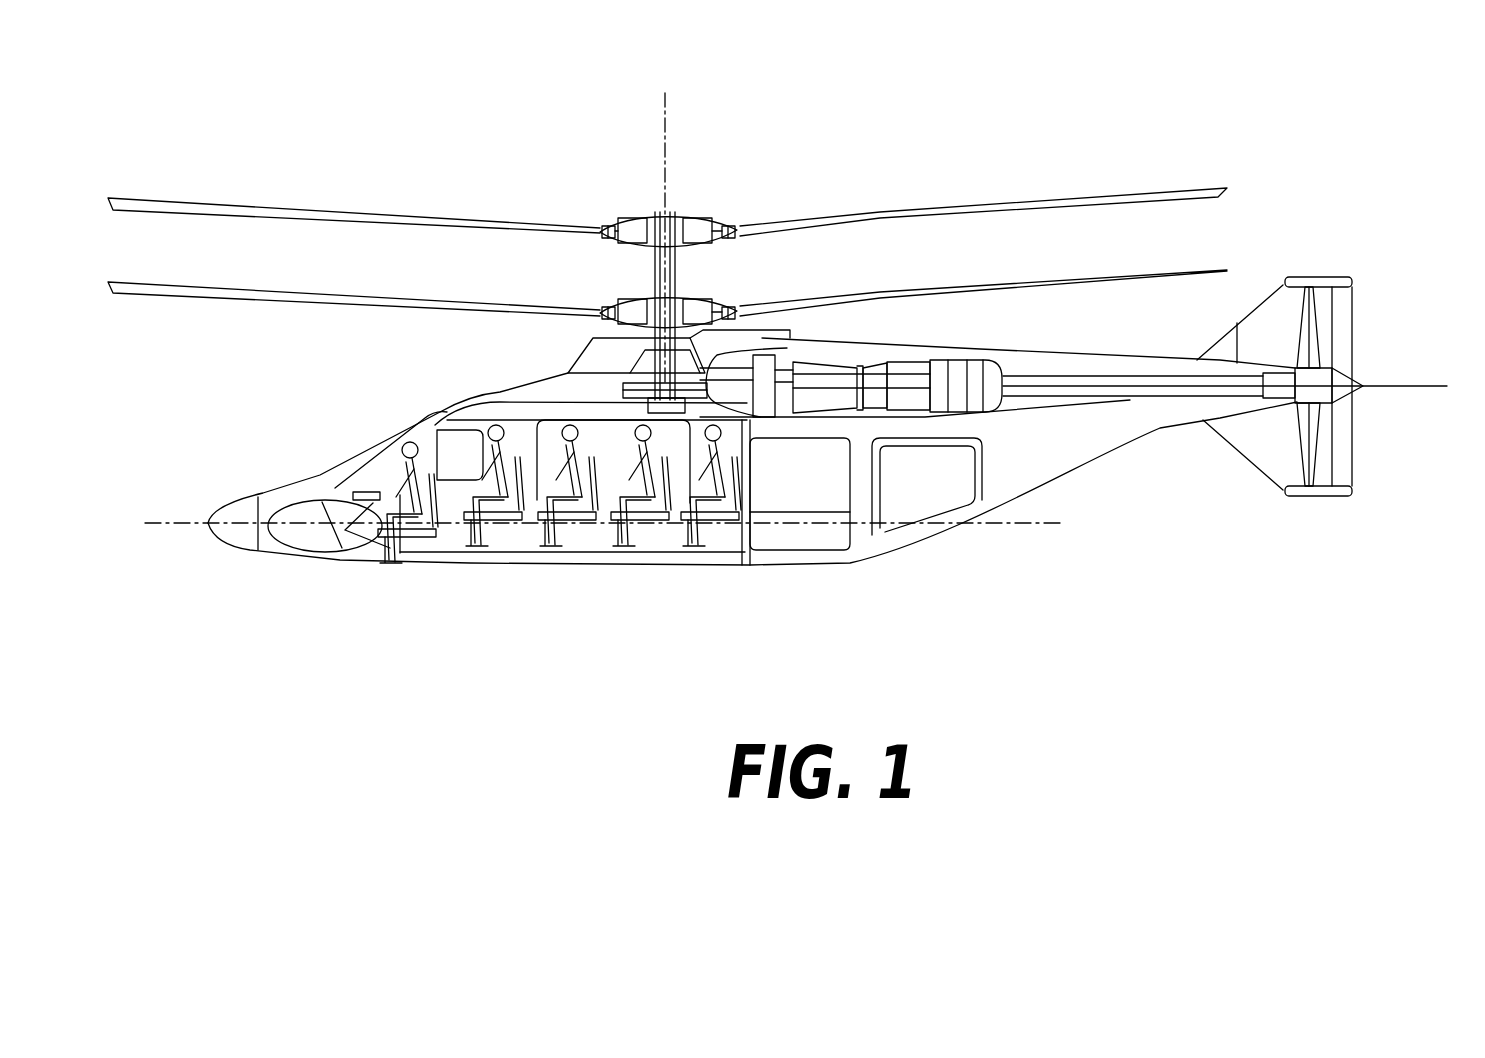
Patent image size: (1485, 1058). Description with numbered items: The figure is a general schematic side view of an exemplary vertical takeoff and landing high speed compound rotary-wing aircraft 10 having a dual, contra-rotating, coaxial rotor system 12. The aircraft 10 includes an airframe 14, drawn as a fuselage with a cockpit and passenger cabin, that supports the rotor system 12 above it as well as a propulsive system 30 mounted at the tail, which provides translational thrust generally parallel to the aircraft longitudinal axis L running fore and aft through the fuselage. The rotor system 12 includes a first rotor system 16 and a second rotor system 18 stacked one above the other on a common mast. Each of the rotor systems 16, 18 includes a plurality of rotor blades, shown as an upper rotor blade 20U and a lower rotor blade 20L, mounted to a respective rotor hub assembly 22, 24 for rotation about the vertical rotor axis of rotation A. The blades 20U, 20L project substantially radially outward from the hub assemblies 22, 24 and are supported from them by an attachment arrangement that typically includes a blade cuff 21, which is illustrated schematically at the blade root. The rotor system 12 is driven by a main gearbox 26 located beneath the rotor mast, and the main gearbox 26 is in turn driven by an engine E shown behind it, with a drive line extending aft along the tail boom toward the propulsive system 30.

The rotary-wing aircraft 10 is at (1005, 158).
The rotor system 12 is at (735, 206).
The airframe 14 is at (470, 397).
The first rotor system 16 is at (634, 208).
The second rotor system 18 is at (716, 299).
The rotor blade 20U is at (883, 297).
The rotor blade 20L is at (1028, 284).
The blade cuff 21 is at (602, 223).
The rotor hub assembly 22 is at (697, 223).
The rotor hub assembly 24 is at (638, 298).
The main gearbox 26 is at (623, 368).
The propulsive system 30 is at (1378, 322).
The rotor axis of rotation A is at (667, 108).
The engine E is at (920, 370).
The aircraft longitudinal axis L is at (1065, 523).